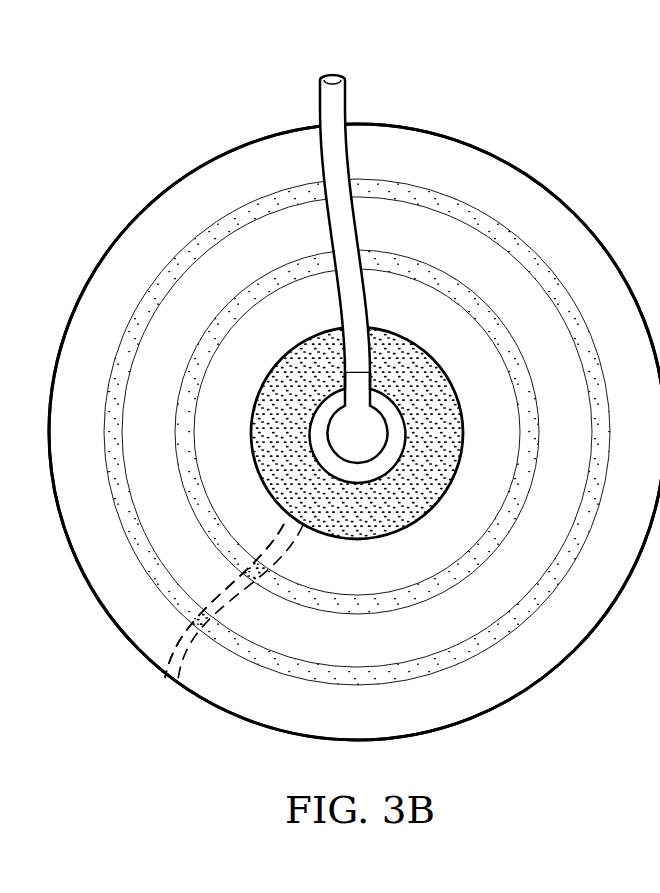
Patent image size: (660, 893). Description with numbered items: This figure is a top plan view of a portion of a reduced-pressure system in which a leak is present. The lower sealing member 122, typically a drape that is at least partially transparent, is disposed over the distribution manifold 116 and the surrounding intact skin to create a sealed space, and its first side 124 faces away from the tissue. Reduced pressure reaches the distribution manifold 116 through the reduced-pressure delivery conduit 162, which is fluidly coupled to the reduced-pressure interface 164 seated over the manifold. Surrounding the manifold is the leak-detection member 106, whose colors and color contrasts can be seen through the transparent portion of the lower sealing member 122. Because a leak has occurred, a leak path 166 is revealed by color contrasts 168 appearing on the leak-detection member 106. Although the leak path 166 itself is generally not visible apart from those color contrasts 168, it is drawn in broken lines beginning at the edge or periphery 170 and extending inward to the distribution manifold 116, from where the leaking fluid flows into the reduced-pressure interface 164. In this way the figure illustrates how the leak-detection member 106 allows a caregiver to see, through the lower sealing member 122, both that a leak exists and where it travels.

The leak-detection member 106 is at (432, 188).
The distribution manifold 116 is at (413, 527).
The lower sealing member 122 is at (569, 658).
The first side 124 is at (500, 693).
The reduced-pressure delivery conduit 162 is at (318, 97).
The reduced-pressure interface 164 is at (348, 447).
The leak path 166 is at (177, 641).
The color contrasts 168 is at (200, 643).
The edge or periphery 170 is at (165, 675).